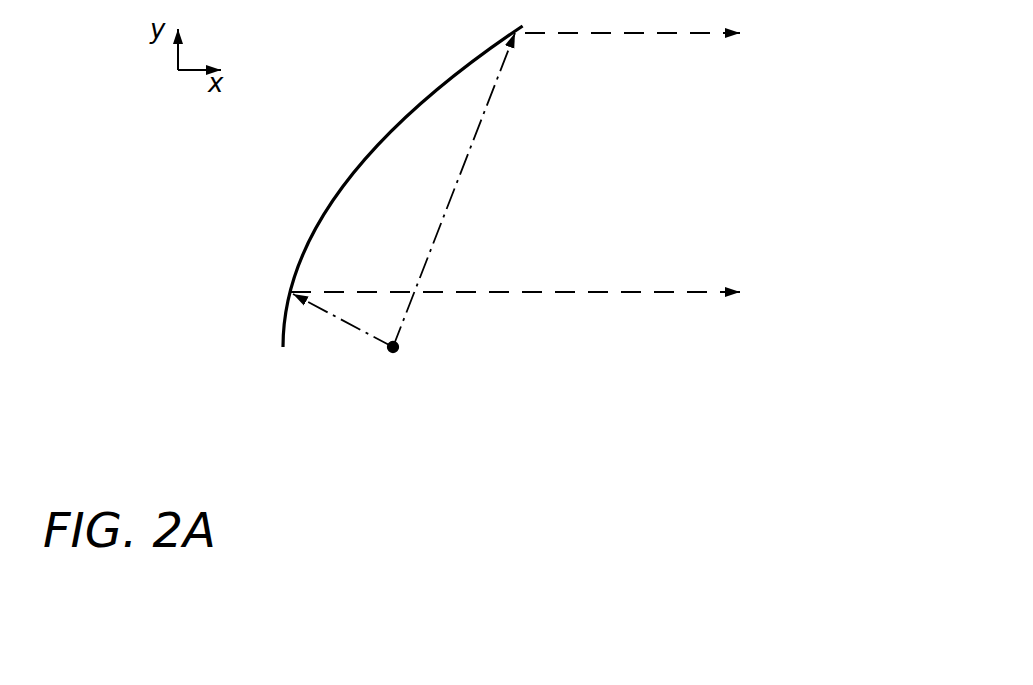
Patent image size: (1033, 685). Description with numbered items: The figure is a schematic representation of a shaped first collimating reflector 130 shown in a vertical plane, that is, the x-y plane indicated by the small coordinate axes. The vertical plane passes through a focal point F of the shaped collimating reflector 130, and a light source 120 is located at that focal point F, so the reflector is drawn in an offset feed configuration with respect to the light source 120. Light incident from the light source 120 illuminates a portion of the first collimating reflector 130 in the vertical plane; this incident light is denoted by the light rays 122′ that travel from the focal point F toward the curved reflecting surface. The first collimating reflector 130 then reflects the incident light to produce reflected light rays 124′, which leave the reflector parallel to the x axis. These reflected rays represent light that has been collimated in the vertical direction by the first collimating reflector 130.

The first collimating reflector 130 is at (351, 157).
The light source 120 is at (386, 358).
The light ray 122′ is at (360, 333).
The light ray 124′ is at (595, 292).